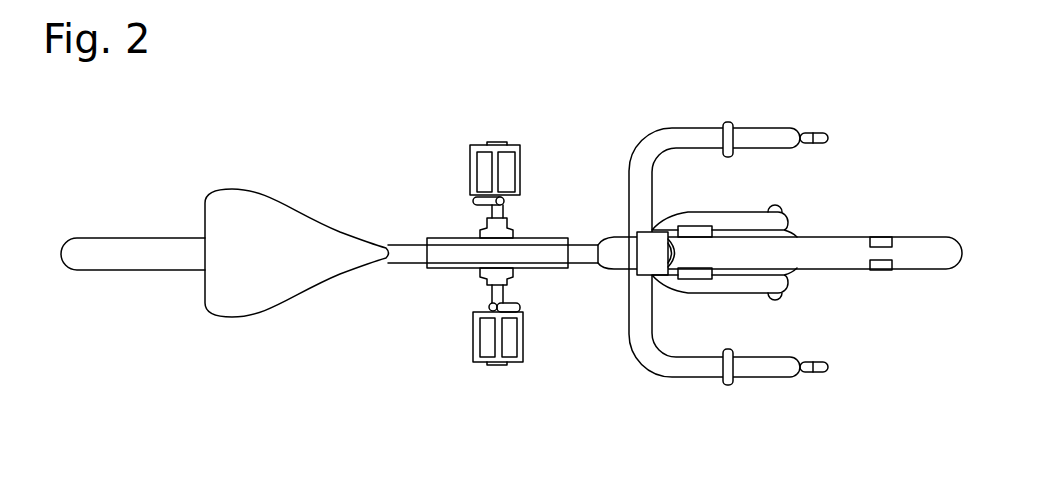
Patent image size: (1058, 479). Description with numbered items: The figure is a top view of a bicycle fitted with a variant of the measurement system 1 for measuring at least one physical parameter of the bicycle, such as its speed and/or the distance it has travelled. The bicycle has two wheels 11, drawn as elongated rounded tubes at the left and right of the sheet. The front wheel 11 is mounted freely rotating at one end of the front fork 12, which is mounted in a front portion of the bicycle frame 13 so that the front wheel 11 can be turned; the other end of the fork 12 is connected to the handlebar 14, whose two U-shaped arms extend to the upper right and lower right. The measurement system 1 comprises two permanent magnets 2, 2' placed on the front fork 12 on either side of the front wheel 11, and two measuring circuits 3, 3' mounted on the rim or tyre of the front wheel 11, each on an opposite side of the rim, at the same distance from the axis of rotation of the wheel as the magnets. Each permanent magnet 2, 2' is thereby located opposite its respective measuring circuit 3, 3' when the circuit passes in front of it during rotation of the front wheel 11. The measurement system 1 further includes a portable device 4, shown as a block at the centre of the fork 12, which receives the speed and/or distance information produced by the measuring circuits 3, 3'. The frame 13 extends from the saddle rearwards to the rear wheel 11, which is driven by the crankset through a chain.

The measurement system 1 is at (882, 113).
The permanent magnet 2 is at (724, 305).
The permanent magnet 2' is at (724, 203).
The measuring circuit 3 is at (881, 297).
The measuring circuit 3' is at (883, 209).
The portable device 4 is at (647, 238).
The wheel 11 is at (117, 247).
The front fork 12 is at (683, 212).
The bicycle frame 13 is at (442, 252).
The handlebar 14 is at (748, 140).